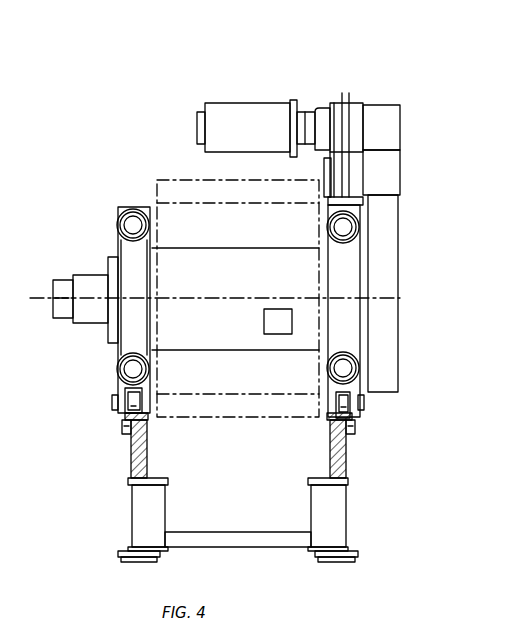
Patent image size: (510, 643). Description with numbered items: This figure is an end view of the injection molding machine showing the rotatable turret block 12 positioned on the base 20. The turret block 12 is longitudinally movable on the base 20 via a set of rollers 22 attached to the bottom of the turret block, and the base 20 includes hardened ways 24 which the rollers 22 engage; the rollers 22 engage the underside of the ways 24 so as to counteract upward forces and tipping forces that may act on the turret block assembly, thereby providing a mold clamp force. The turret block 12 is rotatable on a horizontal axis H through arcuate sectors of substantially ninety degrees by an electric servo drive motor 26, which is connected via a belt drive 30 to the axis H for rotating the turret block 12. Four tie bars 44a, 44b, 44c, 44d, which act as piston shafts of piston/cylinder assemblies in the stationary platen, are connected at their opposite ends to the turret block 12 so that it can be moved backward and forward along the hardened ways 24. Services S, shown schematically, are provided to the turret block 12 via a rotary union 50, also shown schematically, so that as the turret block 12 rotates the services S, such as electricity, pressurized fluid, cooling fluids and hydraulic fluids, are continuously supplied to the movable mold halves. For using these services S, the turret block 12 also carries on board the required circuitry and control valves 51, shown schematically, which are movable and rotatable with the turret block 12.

The turret block 12 is at (340, 224).
The base 20 is at (341, 505).
The rollers 22 is at (348, 404).
The hardened ways 24 is at (148, 418).
The electric servo drive motor 26 is at (266, 104).
The belt drive 30 is at (345, 104).
The tie bar 44a is at (357, 239).
The tie bar 44b is at (130, 222).
The tie bar 44c is at (345, 368).
The tie bar 44d is at (128, 370).
The rotary union 50 is at (93, 321).
The control valves 51 is at (263, 318).
The horizontal axis H is at (50, 296).
The services S is at (53, 303).